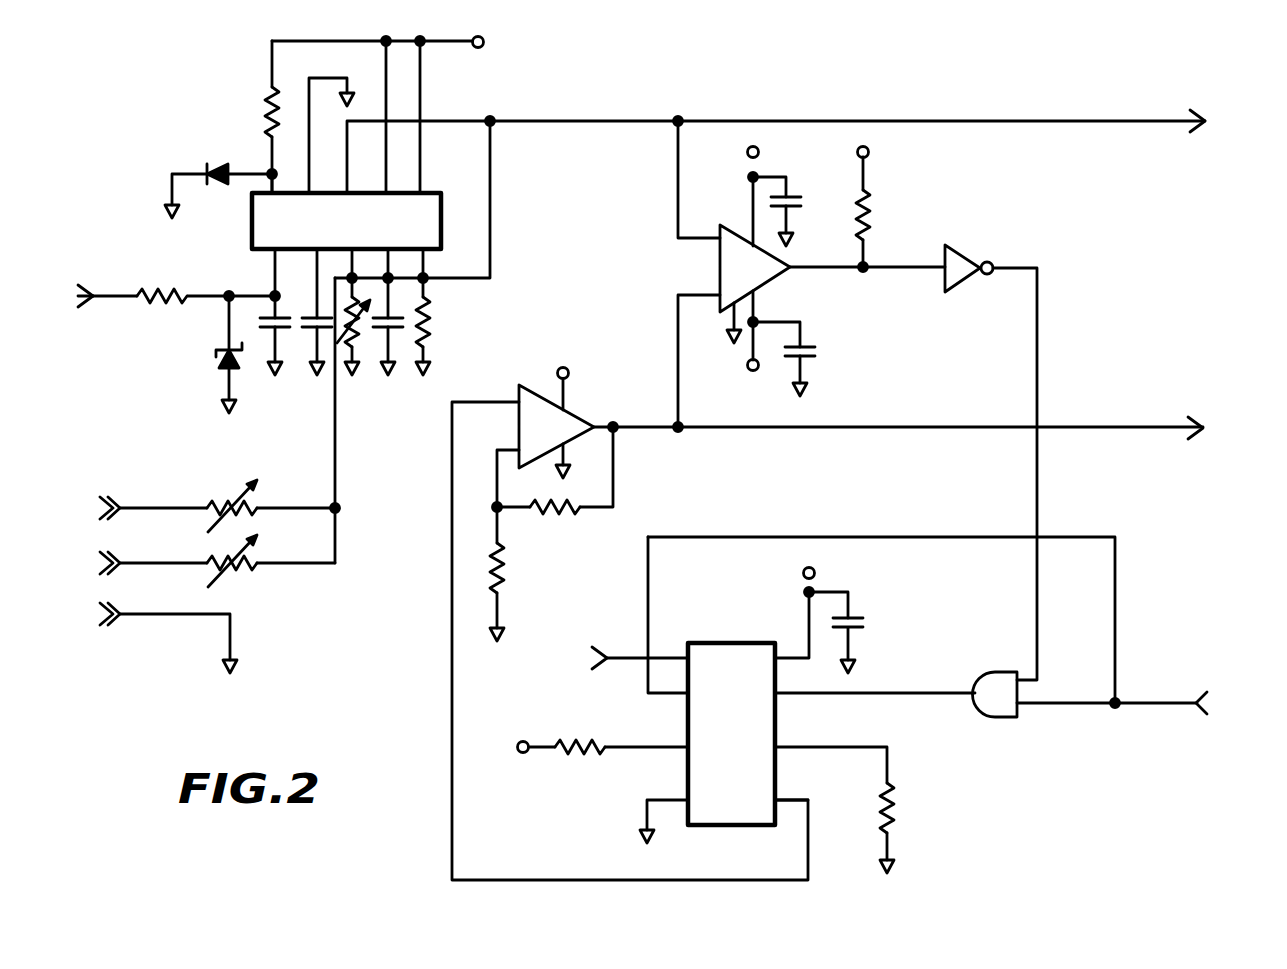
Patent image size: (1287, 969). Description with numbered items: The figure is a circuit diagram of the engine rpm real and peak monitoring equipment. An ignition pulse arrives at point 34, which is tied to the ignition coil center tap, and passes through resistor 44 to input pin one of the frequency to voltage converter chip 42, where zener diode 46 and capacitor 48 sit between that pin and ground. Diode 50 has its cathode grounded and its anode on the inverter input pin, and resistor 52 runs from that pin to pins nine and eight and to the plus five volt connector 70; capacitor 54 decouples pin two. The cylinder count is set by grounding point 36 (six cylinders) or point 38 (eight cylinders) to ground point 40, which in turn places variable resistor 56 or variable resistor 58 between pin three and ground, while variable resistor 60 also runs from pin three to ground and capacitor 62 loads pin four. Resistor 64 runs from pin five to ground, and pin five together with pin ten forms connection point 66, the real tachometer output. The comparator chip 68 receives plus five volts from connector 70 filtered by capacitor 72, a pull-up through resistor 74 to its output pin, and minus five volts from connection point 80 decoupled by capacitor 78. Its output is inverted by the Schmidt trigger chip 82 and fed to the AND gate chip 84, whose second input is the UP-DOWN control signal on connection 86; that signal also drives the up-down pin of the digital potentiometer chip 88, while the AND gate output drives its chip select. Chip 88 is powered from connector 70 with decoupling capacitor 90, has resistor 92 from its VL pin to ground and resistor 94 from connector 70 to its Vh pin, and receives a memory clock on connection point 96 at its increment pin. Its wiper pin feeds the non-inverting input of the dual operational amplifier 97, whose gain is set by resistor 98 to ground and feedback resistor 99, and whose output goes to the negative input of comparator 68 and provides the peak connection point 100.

The point 34 is at (101, 288).
The point 36 is at (90, 508).
The point 38 is at (90, 563).
The ground point 40 is at (90, 614).
The frequency to voltage converter chip 42 is at (362, 235).
The resistor 44 is at (164, 288).
The zener diode 46 is at (214, 354).
The capacitor 48 is at (266, 335).
The diode 50 is at (223, 164).
The resistor 52 is at (264, 108).
The capacitor 54 is at (308, 335).
The variable resistor 56 is at (220, 505).
The variable resistor 58 is at (248, 572).
The variable resistor 60 is at (360, 340).
The capacitor 62 is at (398, 335).
The resistor 64 is at (431, 316).
The connection point 66 is at (1150, 120).
The comparator chip 68 is at (733, 279).
The connector 70 is at (484, 42).
The filter capacitor 72 is at (796, 197).
The resistor 74 is at (873, 217).
The capacitor 78 is at (812, 360).
The connection point 80 is at (747, 366).
The Schmidt trigger chip 82 is at (972, 260).
The AND gate chip 84 is at (993, 671).
The connection 86 is at (1170, 731).
The digital potentiometer chip 88 is at (744, 752).
The decoupling capacitor 90 is at (866, 628).
The resistor 92 is at (903, 813).
The resistor 94 is at (576, 756).
The connection point 96 is at (589, 672).
The dual operational amplifier 97 is at (527, 439).
The resistor 98 is at (506, 573).
The resistor 99 is at (566, 511).
The peak connection point 100 is at (1157, 444).